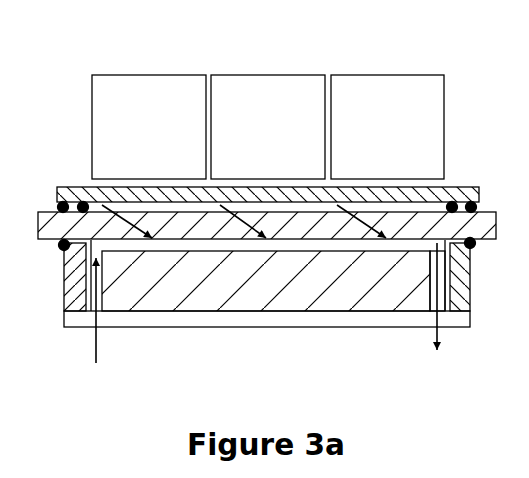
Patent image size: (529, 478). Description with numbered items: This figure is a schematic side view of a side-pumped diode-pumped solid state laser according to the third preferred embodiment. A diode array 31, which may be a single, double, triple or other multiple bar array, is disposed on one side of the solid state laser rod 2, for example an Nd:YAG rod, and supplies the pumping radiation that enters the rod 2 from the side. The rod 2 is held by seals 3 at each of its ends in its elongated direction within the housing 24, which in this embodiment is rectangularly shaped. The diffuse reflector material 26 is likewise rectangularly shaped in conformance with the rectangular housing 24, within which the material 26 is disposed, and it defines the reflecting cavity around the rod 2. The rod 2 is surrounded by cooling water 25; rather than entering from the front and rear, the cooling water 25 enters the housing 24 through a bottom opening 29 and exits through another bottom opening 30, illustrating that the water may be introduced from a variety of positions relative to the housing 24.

The diode array 31 is at (149, 75).
The seals 3 is at (58, 204).
The solid state laser rod 2 is at (497, 212).
The housing 24 is at (68, 276).
The cooling water 25 is at (444, 340).
The diffuse reflector material 26 is at (342, 288).
The bottom opening 29 is at (97, 312).
The bottom opening 30 is at (434, 311).